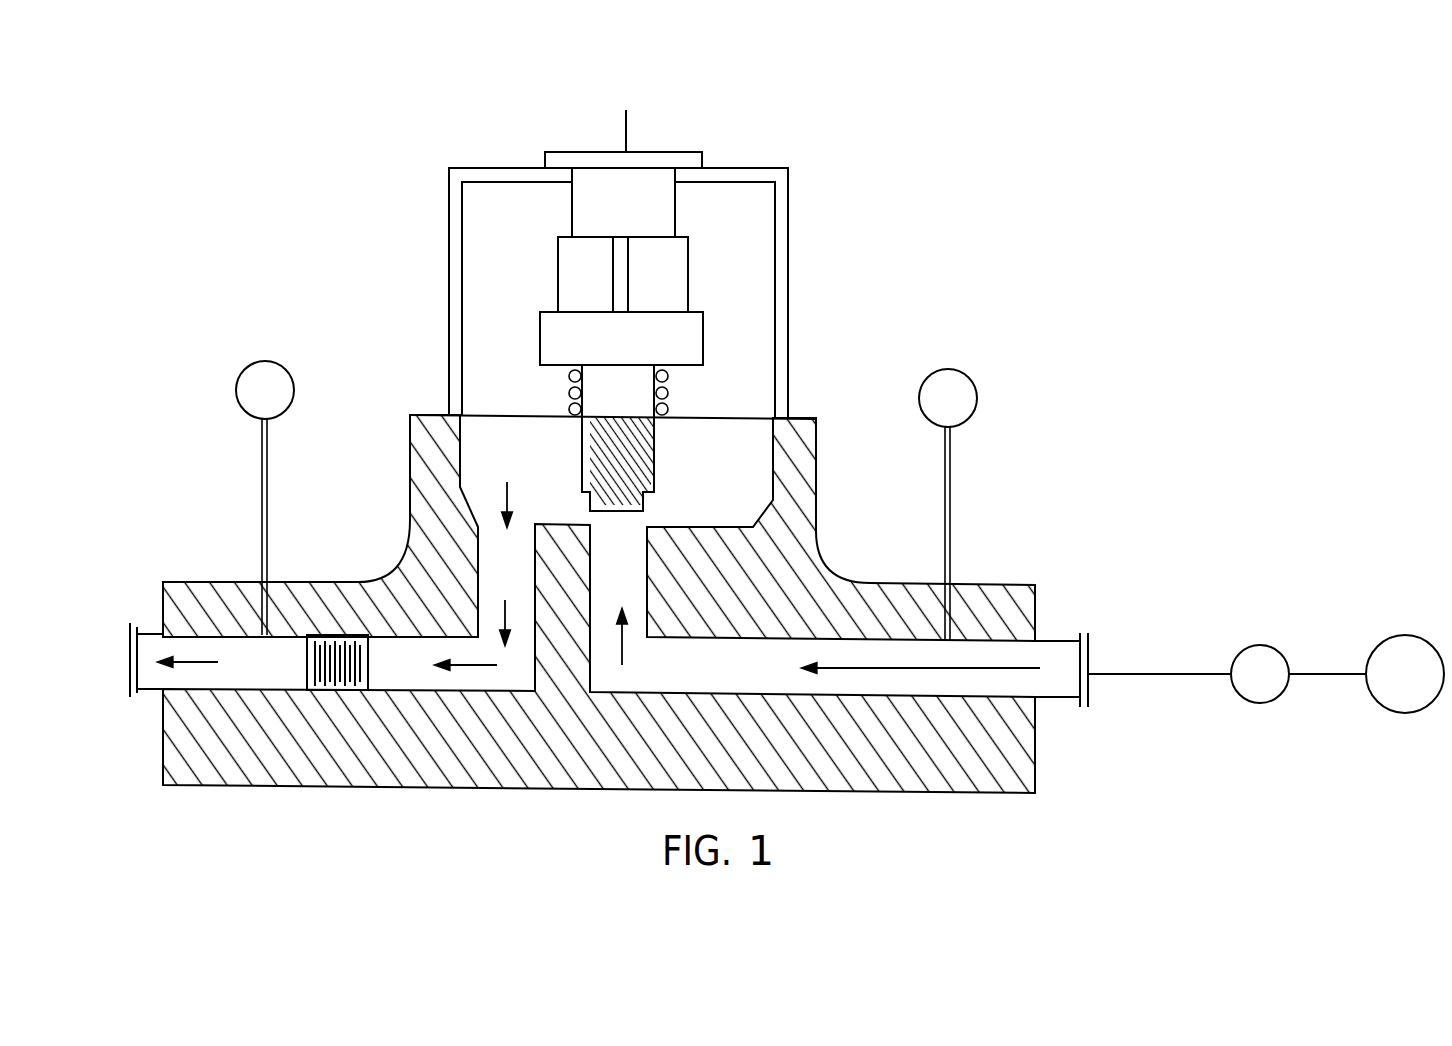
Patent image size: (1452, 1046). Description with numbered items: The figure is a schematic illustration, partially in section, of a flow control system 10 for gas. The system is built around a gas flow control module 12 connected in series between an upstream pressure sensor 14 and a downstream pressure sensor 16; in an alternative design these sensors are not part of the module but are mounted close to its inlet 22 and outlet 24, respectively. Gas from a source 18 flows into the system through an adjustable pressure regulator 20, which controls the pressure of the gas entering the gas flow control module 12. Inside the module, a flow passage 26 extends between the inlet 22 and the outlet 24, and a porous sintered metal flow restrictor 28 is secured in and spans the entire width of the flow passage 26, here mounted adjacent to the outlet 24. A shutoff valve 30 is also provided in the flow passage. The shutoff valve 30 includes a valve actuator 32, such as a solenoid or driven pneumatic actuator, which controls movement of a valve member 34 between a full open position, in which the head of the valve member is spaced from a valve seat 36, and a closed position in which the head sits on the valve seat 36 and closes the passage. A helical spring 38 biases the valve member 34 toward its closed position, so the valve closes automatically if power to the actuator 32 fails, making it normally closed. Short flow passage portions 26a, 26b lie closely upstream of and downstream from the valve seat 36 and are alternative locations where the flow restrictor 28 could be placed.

The flow control system 10 is at (744, 131).
The gas flow control module 12 is at (797, 418).
The upstream pressure sensor 14 is at (957, 370).
The downstream pressure sensor 16 is at (252, 363).
The source 18 is at (1405, 635).
The pressure regulator 20 is at (1257, 645).
The inlet 22 is at (1085, 713).
The outlet 24 is at (130, 700).
The flow passage 26 is at (413, 673).
The short flow passage portion 26a is at (532, 535).
The short flow passage portion 26b is at (645, 535).
The porous sintered metal flow restrictor 28 is at (307, 660).
The shutoff valve 30 is at (790, 213).
The valve actuator 32 is at (558, 257).
The valve member 34 is at (582, 452).
The valve seat 36 is at (647, 524).
The helical spring 38 is at (567, 393).